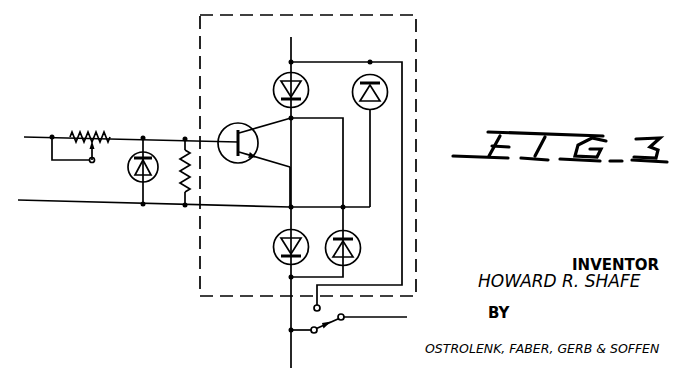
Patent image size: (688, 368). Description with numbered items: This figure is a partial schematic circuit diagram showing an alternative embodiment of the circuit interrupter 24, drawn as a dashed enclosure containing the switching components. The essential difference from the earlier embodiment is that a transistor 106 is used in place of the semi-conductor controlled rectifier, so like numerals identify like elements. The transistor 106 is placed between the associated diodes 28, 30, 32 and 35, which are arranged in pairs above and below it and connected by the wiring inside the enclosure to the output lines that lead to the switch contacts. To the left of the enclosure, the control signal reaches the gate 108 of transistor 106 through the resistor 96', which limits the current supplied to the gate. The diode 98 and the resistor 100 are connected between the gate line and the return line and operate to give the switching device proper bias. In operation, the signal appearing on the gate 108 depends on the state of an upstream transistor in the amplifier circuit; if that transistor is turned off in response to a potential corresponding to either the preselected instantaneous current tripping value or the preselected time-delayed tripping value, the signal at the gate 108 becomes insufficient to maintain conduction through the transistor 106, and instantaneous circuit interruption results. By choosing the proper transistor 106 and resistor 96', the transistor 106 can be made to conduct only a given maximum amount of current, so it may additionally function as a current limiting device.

The circuit interrupter 24 is at (416, 67).
The resistor 96' is at (81, 130).
The diode 98 is at (129, 180).
The resistor 100 is at (180, 183).
The transistor 106 is at (240, 124).
The gate 108 is at (228, 161).
The diode 30 is at (278, 78).
The diode 28 is at (352, 93).
The diode 32 is at (276, 258).
The diode 35 is at (359, 246).